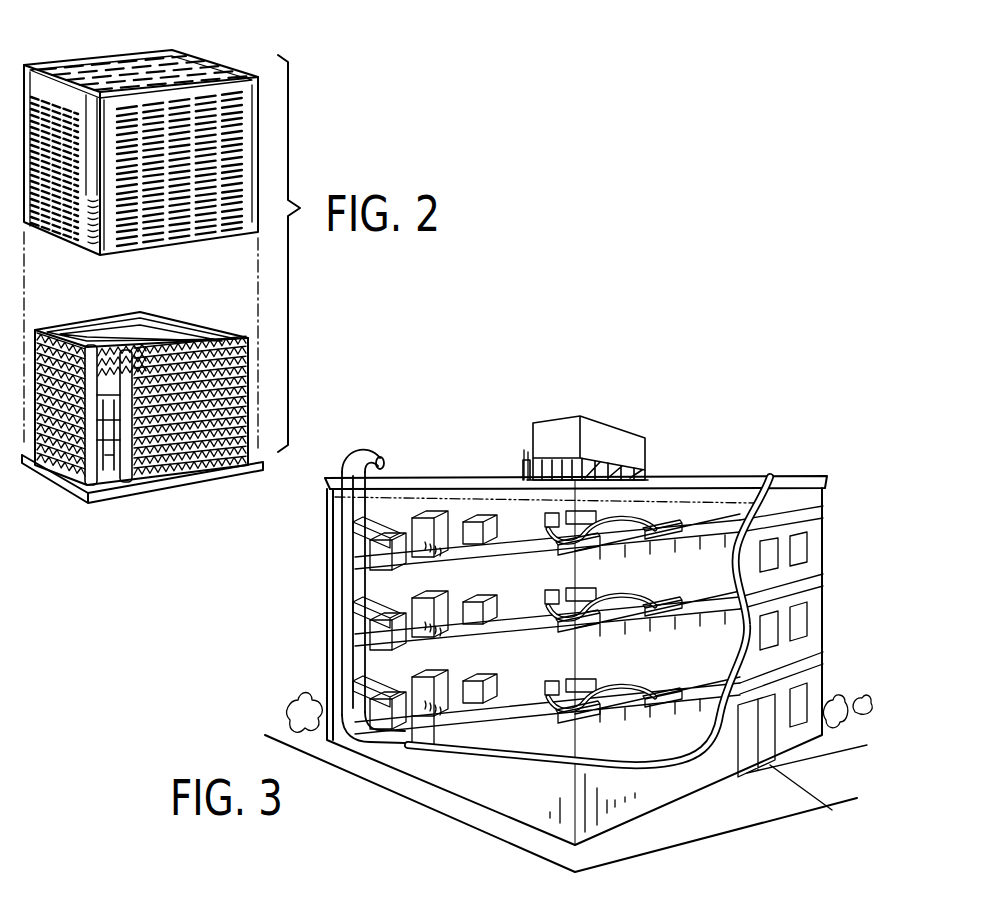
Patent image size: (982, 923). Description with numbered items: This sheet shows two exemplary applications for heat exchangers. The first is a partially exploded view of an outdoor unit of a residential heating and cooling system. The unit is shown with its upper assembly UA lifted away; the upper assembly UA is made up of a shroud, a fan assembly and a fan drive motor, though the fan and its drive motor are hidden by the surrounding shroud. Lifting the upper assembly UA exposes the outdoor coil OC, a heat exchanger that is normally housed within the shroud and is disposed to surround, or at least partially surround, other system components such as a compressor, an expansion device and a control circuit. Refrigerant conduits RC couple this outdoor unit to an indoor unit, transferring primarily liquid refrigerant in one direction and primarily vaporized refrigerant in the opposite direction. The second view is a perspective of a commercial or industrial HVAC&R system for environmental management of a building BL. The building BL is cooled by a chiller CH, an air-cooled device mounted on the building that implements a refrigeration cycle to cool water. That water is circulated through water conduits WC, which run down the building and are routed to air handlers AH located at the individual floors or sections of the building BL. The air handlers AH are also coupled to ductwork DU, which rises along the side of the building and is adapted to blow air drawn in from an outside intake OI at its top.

In FIG. 2, the upper assembly UA is at (108, 60).
In FIG. 2, the outdoor coil OC is at (115, 320).
In FIG. 2, the refrigerant conduits RC is at (466, 0).
In FIG. 3, the outside intake OI is at (360, 456).
In FIG. 3, the water conduits WC is at (524, 450).
In FIG. 3, the chiller CH is at (612, 442).
In FIG. 3, the ductwork DU is at (350, 508).
In FIG. 3, the air handlers AH is at (392, 727).
In FIG. 3, the building BL is at (683, 783).